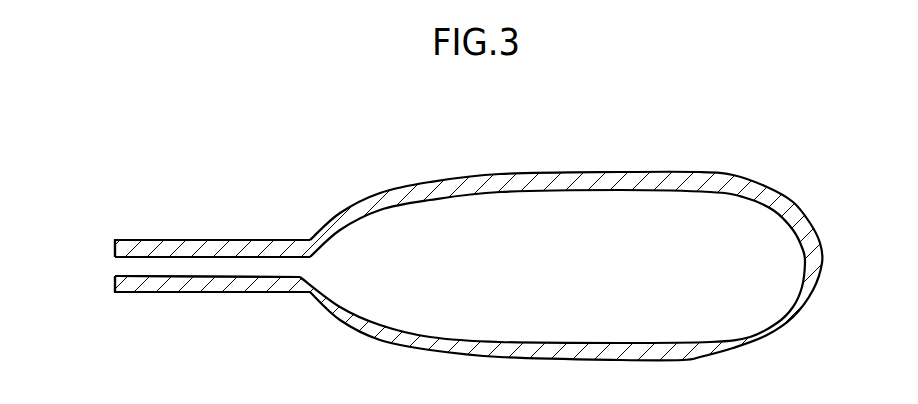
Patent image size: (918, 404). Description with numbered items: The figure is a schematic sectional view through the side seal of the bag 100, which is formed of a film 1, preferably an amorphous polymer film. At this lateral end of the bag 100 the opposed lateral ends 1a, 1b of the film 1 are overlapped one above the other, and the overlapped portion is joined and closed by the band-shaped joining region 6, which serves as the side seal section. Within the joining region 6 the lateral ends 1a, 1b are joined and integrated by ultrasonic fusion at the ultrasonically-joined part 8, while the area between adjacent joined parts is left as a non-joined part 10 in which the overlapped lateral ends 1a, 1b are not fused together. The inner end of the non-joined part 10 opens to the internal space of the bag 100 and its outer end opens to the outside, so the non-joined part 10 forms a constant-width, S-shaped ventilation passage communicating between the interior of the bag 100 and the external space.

The bag 100 is at (760, 172).
The film 1 is at (797, 199).
The lateral end of the film 1a is at (132, 238).
The lateral end of the film 1b is at (133, 287).
The non-joined part 10 is at (137, 265).
The narrow ultrasonically-joined part 8 is at (233, 263).
The joining region 6 is at (178, 213).